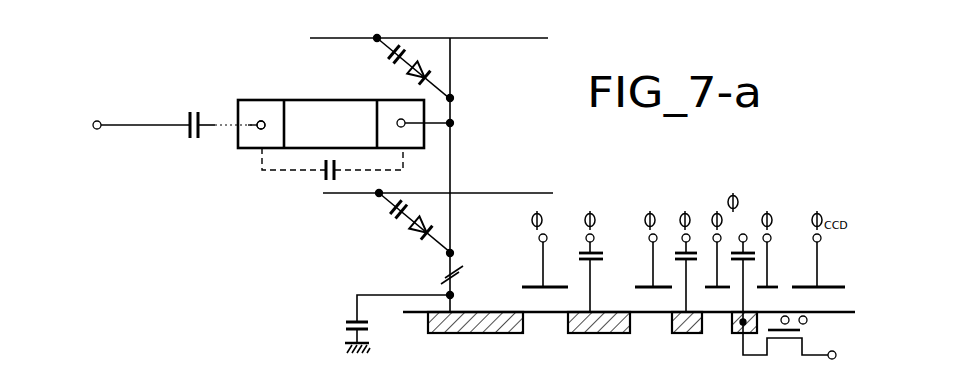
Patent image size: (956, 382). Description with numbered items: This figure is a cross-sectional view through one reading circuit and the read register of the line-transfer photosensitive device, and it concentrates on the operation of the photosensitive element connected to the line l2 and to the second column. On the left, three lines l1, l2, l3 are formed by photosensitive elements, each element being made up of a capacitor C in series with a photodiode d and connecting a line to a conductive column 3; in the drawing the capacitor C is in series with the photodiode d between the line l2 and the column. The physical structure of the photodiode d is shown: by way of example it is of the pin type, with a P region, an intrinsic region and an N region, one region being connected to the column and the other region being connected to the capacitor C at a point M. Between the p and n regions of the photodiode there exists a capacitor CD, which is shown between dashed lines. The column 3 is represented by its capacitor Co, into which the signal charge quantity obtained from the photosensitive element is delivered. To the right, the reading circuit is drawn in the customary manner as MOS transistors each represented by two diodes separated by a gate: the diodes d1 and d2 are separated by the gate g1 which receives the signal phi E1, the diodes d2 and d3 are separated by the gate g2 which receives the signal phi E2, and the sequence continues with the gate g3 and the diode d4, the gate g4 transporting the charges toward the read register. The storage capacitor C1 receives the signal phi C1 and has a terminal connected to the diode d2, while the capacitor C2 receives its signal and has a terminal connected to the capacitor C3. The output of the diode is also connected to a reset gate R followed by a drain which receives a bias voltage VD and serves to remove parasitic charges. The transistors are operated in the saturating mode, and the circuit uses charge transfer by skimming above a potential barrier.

The conductive column 3 is at (456, 288).
The line l1 is at (341, 38).
The line l2 is at (129, 126).
The line l3 is at (353, 193).
The capacitor C is at (188, 112).
The photodiode d is at (344, 106).
The photosensitive element P is at (261, 130).
The n region N is at (423, 129).
The point M is at (258, 131).
The capacitor CD is at (327, 177).
The capacitor C2 is at (452, 163).
The capacitor Co is at (347, 319).
The gate g1 is at (528, 285).
The gate g2 is at (648, 282).
The gate g3 is at (729, 292).
The gate g4 is at (770, 284).
The diode d1 is at (488, 334).
The diode d2 is at (578, 334).
The diode d3 is at (672, 334).
The diode d4 is at (732, 334).
The capacitor C1 is at (600, 262).
The capacitor C3 is at (697, 260).
The gate R is at (794, 327).
The bias voltage VD is at (798, 314).